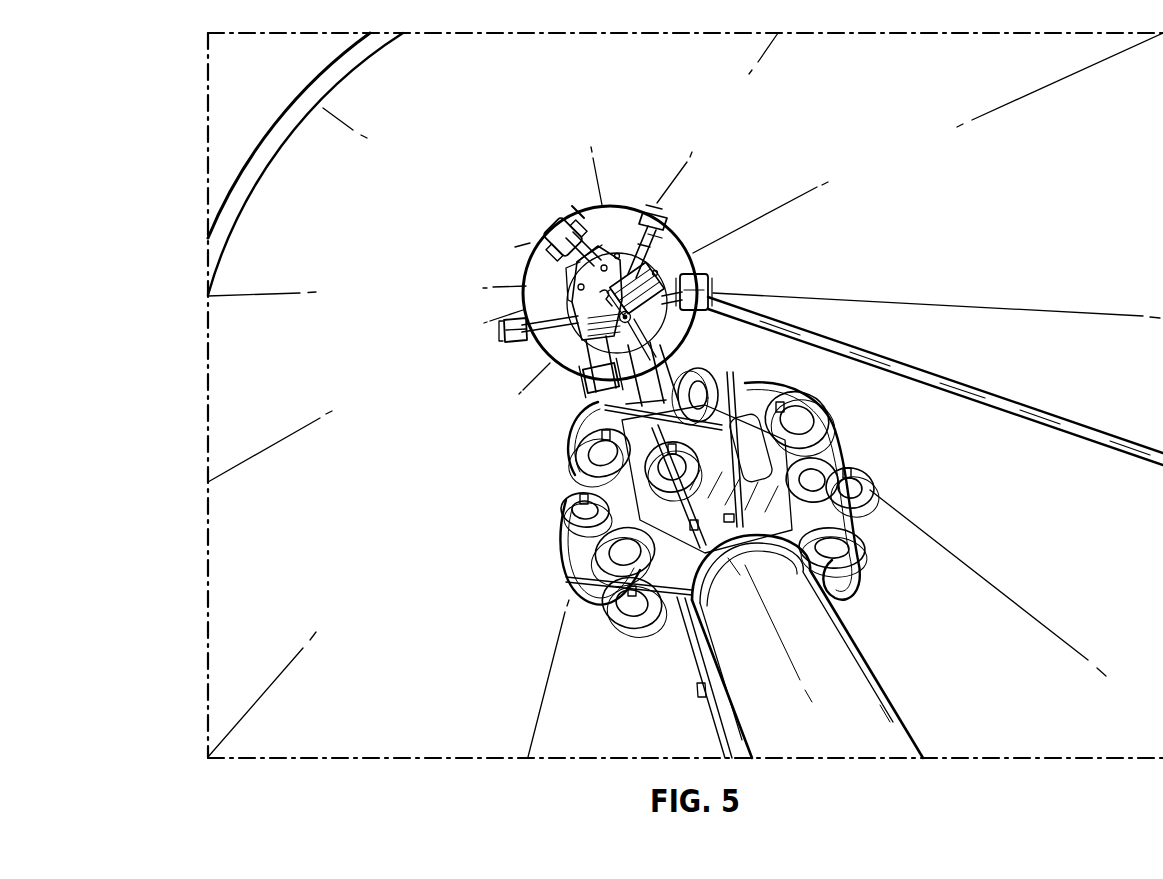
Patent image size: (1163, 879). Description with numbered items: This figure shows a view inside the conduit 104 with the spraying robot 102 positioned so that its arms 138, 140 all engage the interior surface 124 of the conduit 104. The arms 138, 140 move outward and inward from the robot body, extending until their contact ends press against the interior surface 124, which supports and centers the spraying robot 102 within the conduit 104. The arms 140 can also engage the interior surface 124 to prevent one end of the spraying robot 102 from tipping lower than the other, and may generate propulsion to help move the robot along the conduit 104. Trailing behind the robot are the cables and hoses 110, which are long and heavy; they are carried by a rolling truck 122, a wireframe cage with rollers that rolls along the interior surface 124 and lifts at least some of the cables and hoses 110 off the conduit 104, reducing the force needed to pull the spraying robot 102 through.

The spraying robot 102 is at (556, 278).
The conduit 104 is at (218, 252).
The cables and hoses 110 is at (685, 696).
The rolling truck 122 is at (548, 572).
The interior surface 124 is at (262, 330).
The arm 138 is at (667, 224).
The arm 140 is at (556, 222).